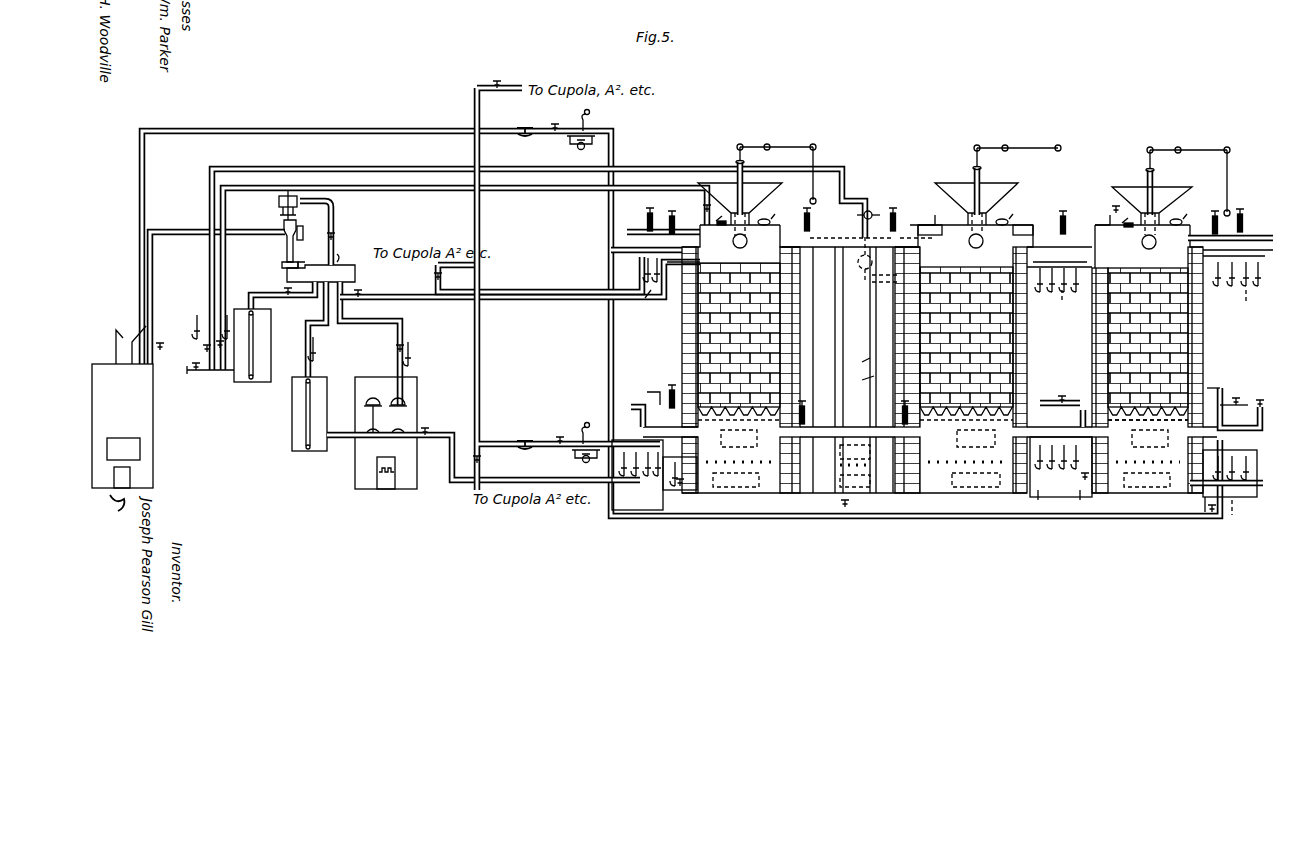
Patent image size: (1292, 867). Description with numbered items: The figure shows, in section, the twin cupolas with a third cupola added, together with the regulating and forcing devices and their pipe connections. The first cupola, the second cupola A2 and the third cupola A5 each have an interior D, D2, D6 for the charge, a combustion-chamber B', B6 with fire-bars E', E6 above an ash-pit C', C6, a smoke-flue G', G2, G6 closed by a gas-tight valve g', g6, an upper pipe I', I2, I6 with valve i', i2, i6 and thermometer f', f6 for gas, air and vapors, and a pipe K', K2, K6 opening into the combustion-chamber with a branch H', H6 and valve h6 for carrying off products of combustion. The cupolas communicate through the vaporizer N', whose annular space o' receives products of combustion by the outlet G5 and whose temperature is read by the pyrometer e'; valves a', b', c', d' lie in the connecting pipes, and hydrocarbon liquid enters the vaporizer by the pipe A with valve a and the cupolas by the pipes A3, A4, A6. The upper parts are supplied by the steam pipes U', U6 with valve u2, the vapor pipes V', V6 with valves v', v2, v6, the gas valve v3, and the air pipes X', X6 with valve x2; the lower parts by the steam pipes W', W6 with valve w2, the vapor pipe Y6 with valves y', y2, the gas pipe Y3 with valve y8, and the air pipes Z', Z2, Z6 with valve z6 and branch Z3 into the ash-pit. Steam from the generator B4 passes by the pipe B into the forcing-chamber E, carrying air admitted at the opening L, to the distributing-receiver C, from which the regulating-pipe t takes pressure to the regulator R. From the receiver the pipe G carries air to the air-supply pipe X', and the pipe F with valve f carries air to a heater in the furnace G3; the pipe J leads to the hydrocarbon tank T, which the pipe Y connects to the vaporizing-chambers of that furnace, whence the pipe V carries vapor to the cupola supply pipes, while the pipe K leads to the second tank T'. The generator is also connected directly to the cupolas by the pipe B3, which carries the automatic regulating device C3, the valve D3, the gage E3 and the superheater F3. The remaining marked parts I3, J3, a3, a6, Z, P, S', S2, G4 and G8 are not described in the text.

The gas main pipe B3 is at (667, 311).
The gas supply pipe B is at (216, 289).
The air pipe A is at (524, 269).
The air pipe A3 is at (447, 274).
The gas producer B4 is at (128, 418).
The regulator R is at (280, 205).
The injector E is at (283, 244).
The valve L is at (306, 233).
The mixing chamber C is at (321, 272).
The pipe t is at (322, 233).
The pipe K is at (441, 357).
The pipe J is at (309, 329).
The pipe F is at (370, 343).
The valve f is at (398, 350).
The pipe G is at (520, 279).
The gauge T' is at (259, 345).
The gauge T is at (314, 414).
The chamber / hopper G3 is at (568, 336).
The bell I3 is at (385, 410).
The bell J3 is at (385, 424).
The pipe Y is at (483, 457).
The valve V is at (427, 440).
The pipe V' is at (538, 306).
The pipe W' is at (566, 285).
The pipe U' is at (632, 240).
The valve C3 is at (527, 278).
The valve D3 is at (558, 276).
The valve E3 is at (588, 274).
The regulating valve F3 is at (583, 299).
The pipe I' is at (663, 240).
The valve f' is at (645, 217).
The valve i' is at (667, 222).
The valve a3 is at (699, 210).
The damper g' is at (718, 229).
The feed pipe G' is at (774, 196).
The chamber H' is at (741, 243).
The furnace D is at (741, 370).
The valve c' is at (802, 402).
The valve d' is at (906, 402).
The flue B' is at (930, 428).
The burner E' is at (855, 446).
The burner C' is at (849, 480).
The pipe K' is at (653, 393).
The chamber Y3 is at (637, 475).
The chamber Z' is at (778, 356).
The valve Z3 is at (674, 492).
The pipe X' is at (675, 286).
The valve v' is at (637, 270).
The valve v3 is at (635, 300).
The flue N' is at (851, 370).
The opening o' is at (860, 360).
The partition P is at (861, 380).
The valve S' is at (837, 503).
The chamber S2 is at (858, 478).
The valve a' is at (813, 218).
The valve a is at (855, 214).
The pipe e' is at (880, 213).
The valve b' is at (897, 216).
The air pipe A4 is at (923, 209).
The chamber Z is at (917, 236).
The feed pipe G5 is at (873, 263).
The chamber A2 is at (964, 245).
The furnace D2 is at (973, 370).
The hopper G4 is at (976, 204).
The feed pipe G2 is at (1015, 197).
The pipe I2 is at (1062, 249).
The valve i2 is at (1064, 218).
The air pipe A6 is at (1097, 209).
The valve a6 is at (1110, 216).
The damper g6 is at (1130, 231).
The feed pipe G6 is at (1186, 199).
The hopper G8 is at (1152, 206).
The chamber A5 is at (1149, 246).
The furnace D6 is at (1147, 370).
The valve x2 is at (1047, 292).
The valve v2 is at (1060, 296).
The valve u2 is at (1075, 291).
The valve X6 is at (1217, 288).
The valve V6 is at (1236, 288).
The valve v6 is at (1251, 294).
The valve U6 is at (1266, 285).
The pipe I6 is at (1230, 244).
The valve i6 is at (1220, 218).
The valve f6 is at (1247, 216).
The flue B6 is at (1148, 428).
The burner E6 is at (1148, 448).
The burner C6 is at (1155, 482).
The pipe K2 is at (1061, 416).
The pipe K6 is at (1256, 388).
The pipe H6 is at (1219, 382).
The valve h6 is at (1235, 395).
The pipe W6 is at (1239, 483).
The chamber Y6 is at (1239, 488).
The pipe y8 is at (1232, 514).
The valve Z6 is at (1199, 509).
The pipe z6 is at (1209, 507).
The chamber y2 is at (1061, 474).
The pipe w2 is at (1089, 500).
The pipe y' is at (1045, 500).
The valve Z2 is at (1085, 468).